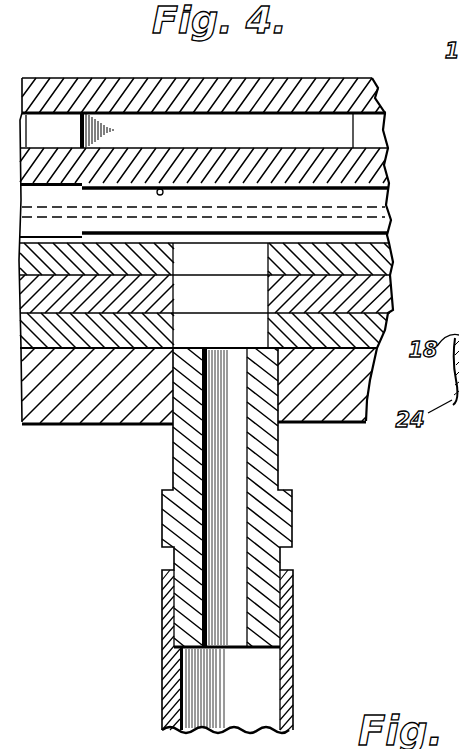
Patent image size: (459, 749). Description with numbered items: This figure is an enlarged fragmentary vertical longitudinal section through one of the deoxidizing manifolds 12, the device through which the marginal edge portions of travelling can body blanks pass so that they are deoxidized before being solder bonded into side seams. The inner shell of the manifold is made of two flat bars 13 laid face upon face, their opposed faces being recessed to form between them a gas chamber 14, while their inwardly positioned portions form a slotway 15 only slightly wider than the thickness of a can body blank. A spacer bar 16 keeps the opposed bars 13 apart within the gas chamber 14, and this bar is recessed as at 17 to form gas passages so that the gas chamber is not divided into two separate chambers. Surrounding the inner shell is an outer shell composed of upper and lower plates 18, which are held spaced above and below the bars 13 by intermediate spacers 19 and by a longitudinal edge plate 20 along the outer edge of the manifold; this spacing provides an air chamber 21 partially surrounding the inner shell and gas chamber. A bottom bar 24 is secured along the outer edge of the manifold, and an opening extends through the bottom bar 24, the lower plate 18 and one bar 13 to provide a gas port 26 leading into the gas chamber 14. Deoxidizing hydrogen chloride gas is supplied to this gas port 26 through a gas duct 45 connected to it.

The deoxidizing manifold 12 is at (28, 76).
The flat bar 13 is at (383, 162).
The gas chamber 14 is at (243, 190).
The slotway 15 is at (362, 200).
The spacer bar 16 is at (389, 144).
The recess 17 is at (157, 189).
The upper and lower plates 18 is at (53, 90).
The intermediate spacer 19 is at (395, 78).
The longitudinal edge plate 20 is at (292, 120).
The air chamber 21 is at (222, 116).
The bottom bar 24 is at (78, 418).
The gas port 26 is at (220, 295).
The gas duct 45 is at (297, 657).